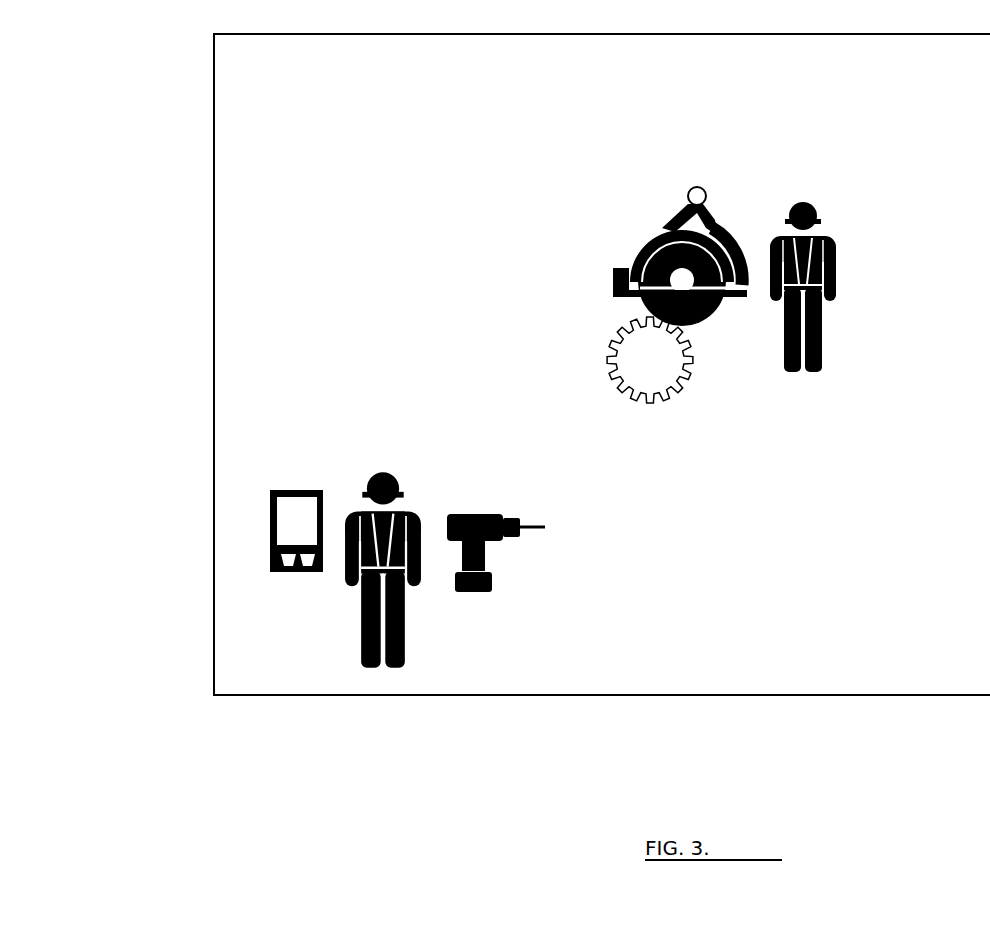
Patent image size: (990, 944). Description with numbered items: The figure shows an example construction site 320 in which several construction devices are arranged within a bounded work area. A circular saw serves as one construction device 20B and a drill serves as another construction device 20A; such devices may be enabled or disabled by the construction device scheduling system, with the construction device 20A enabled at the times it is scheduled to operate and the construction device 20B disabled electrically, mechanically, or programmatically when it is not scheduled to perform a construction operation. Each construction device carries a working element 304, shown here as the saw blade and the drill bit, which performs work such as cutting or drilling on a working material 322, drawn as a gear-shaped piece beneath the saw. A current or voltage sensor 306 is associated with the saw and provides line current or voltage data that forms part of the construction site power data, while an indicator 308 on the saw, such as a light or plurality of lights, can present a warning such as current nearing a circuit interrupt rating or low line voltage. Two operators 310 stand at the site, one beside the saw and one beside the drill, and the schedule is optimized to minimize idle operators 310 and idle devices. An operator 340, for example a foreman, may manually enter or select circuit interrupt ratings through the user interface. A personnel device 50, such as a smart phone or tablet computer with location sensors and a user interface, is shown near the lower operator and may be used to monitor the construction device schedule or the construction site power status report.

The construction device 20A is at (457, 540).
The construction device 20B is at (678, 223).
The personnel device 50 is at (272, 514).
The working element 304 is at (637, 401).
The current or voltage sensor 306 is at (646, 295).
The indicator 308 is at (736, 183).
The operator 310 is at (598, 487).
The construction site 320 is at (554, 364).
The working material 322 is at (394, 346).
The operator 340 is at (808, 398).